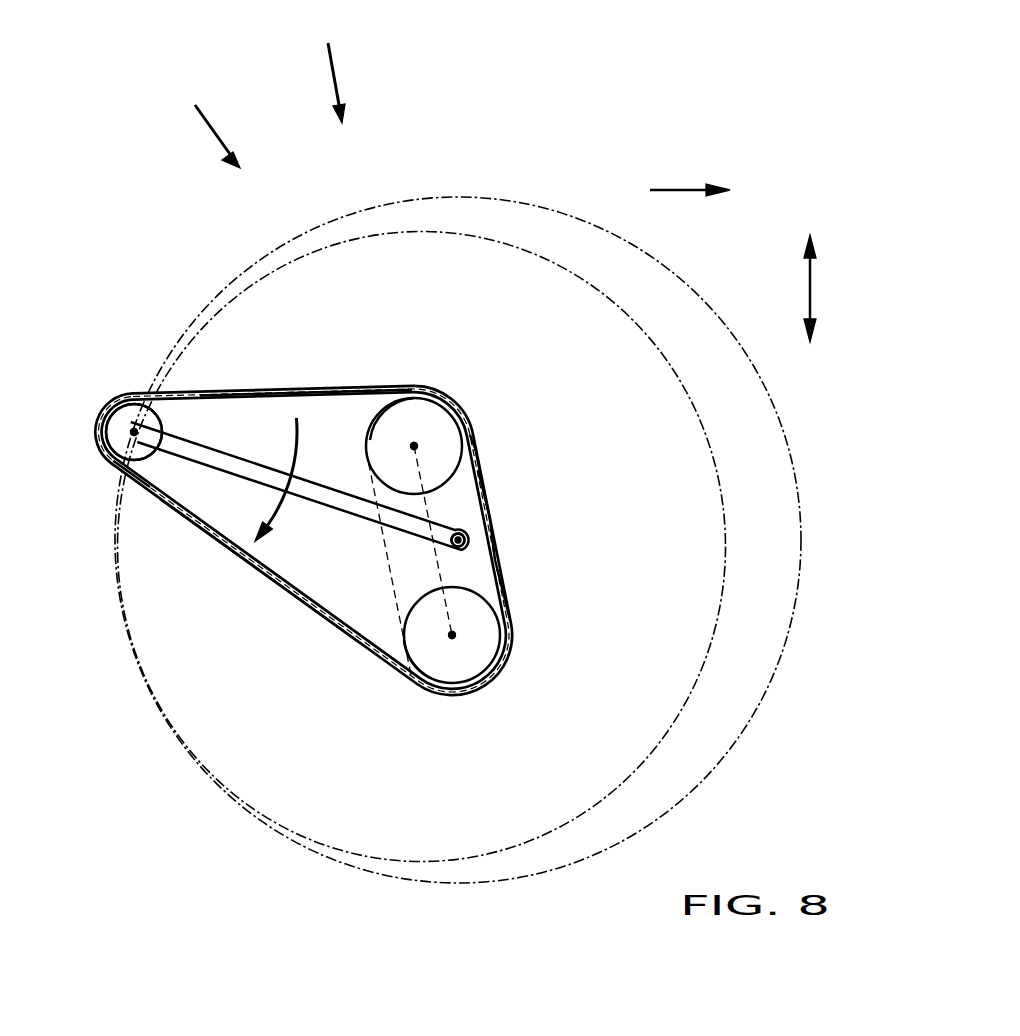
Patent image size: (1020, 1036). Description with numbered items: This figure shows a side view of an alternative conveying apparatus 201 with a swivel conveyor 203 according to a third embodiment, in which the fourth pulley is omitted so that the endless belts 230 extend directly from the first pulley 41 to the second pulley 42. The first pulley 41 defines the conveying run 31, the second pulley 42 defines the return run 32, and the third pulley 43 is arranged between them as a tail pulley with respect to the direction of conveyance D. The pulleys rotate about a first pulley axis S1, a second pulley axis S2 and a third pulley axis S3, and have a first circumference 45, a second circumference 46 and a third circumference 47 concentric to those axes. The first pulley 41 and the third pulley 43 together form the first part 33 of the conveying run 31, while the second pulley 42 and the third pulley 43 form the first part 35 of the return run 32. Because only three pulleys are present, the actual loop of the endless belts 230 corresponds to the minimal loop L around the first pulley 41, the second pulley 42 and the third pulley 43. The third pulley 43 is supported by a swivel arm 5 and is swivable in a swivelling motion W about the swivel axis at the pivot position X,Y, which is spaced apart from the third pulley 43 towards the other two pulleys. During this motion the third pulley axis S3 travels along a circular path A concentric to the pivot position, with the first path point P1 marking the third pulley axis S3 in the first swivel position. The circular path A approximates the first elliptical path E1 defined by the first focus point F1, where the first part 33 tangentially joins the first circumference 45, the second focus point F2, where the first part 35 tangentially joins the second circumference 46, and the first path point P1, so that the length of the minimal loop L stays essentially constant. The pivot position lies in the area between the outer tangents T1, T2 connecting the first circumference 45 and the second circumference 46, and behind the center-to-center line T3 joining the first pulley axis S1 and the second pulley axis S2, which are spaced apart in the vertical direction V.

The conveying apparatus 201 is at (201, 120).
The swivel conveyor 203 is at (335, 69).
The circular path A is at (497, 198).
The direction of conveyance D is at (690, 177).
The vertical direction V is at (824, 288).
The first elliptical path E1 is at (207, 312).
The first part of the conveying run 33 is at (265, 392).
The conveying run 31 is at (322, 392).
The return run 32 is at (308, 603).
The first part of the return run 35 is at (227, 547).
The endless belts 230 is at (168, 500).
The first circumference 45 is at (476, 436).
The second circumference 46 is at (508, 617).
The third pulley 43 is at (107, 403).
The third circumference 47 is at (157, 404).
The third pulley axis S3 is at (133, 432).
The first path point P1 is at (108, 459).
The first pulley 41 is at (430, 427).
The first focus point F1 is at (415, 399).
The first pulley axis S1 is at (412, 447).
The second pulley 42 is at (478, 648).
The second pulley axis S2 is at (452, 640).
The second focus point F2 is at (413, 673).
The outer tangent T1 is at (393, 574).
The swivel arm 5 is at (328, 508).
The swivel axis and pivot position X,Y is at (487, 531).
The minimal loop L is at (497, 558).
The center-to-center line T3 is at (450, 493).
The outer tangent T2 is at (487, 508).
The swivelling motion W is at (276, 488).